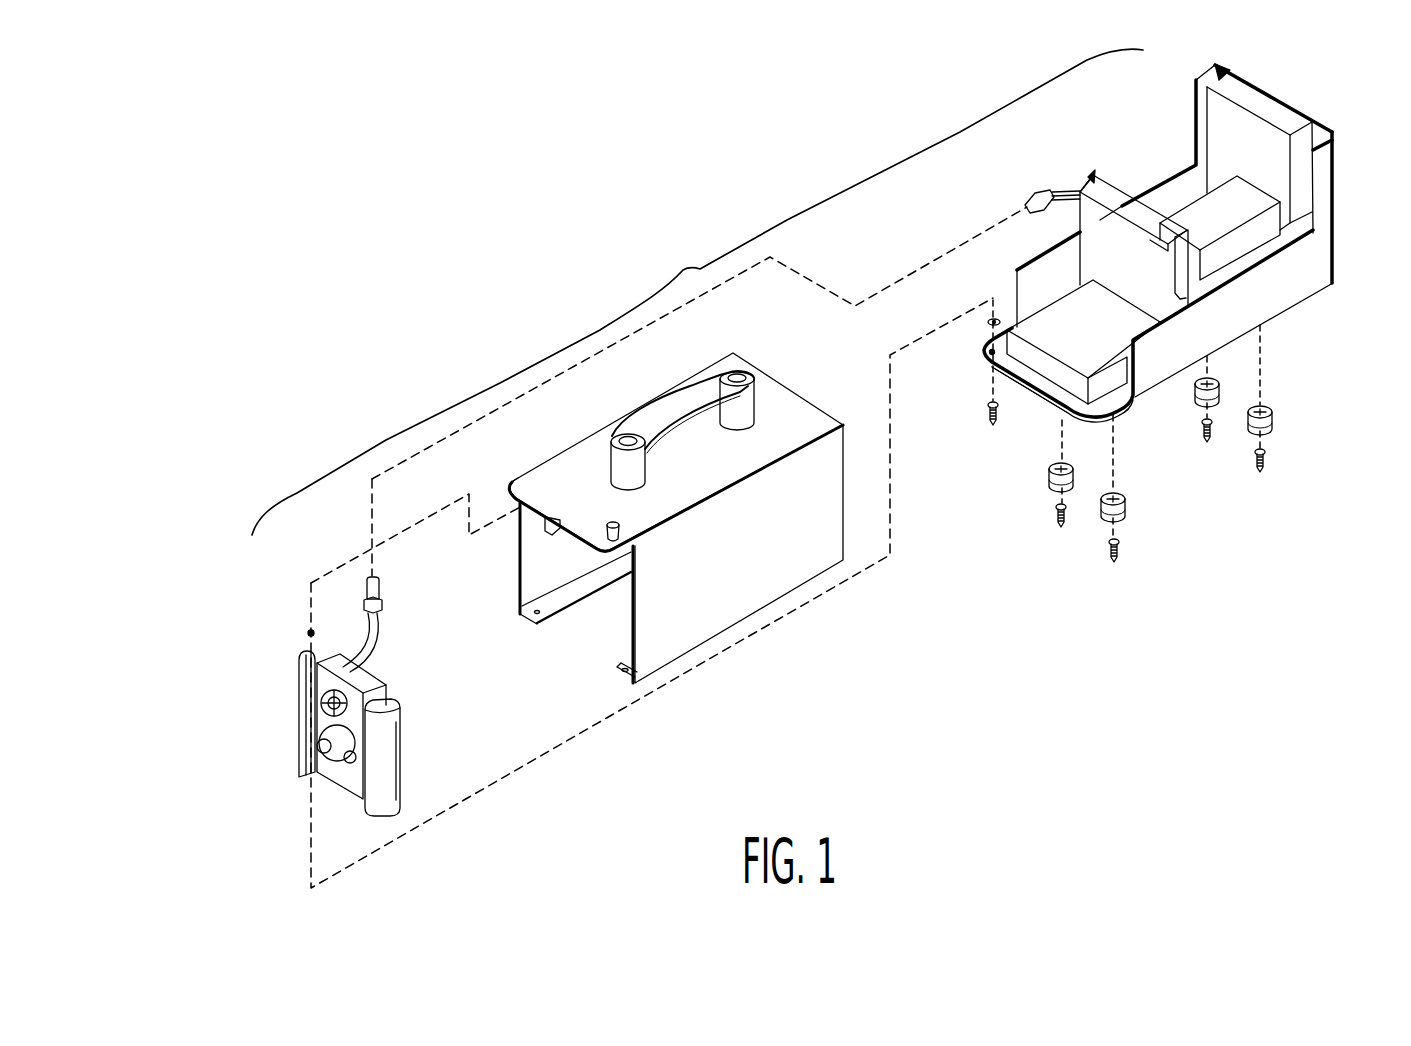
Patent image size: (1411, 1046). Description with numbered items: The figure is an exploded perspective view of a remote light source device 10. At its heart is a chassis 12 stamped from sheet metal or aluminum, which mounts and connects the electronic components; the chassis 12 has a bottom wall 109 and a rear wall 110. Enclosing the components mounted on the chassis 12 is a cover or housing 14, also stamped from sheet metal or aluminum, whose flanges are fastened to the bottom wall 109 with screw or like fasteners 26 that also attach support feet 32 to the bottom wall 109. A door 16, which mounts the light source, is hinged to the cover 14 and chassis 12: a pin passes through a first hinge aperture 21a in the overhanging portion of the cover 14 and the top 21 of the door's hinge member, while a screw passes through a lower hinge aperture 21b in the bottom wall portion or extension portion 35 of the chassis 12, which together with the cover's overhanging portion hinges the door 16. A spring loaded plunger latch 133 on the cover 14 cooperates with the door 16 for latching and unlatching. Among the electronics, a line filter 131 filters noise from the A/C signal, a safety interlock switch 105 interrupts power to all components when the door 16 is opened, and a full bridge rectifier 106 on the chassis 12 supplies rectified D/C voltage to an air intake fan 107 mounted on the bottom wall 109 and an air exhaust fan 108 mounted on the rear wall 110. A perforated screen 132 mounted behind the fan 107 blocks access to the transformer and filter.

The remote light source device 10 is at (683, 270).
The chassis 12 is at (1280, 318).
The cover or housing 14 is at (612, 418).
The door 16 is at (303, 652).
The top of the hinge member 21 is at (316, 647).
The first hinge aperture 21a is at (524, 481).
The lower hinge aperture 21b is at (990, 353).
The screw or like fasteners 26 is at (1113, 552).
The support feet 32 is at (1113, 487).
The bottom wall portion (extension portion) of the chassis 35 is at (1053, 397).
The safety interlock switch 105 is at (1143, 390).
The full bridge rectifier 106 is at (1307, 236).
The air intake D/C fan 107 is at (1050, 330).
The air exhaust D/C fan 108 is at (1263, 110).
The bottom wall 109 is at (1192, 178).
The rear wall 110 is at (1335, 130).
The line filter 131 is at (1150, 200).
The perforated screen 132 is at (1080, 240).
The plunger latch 133 is at (618, 524).